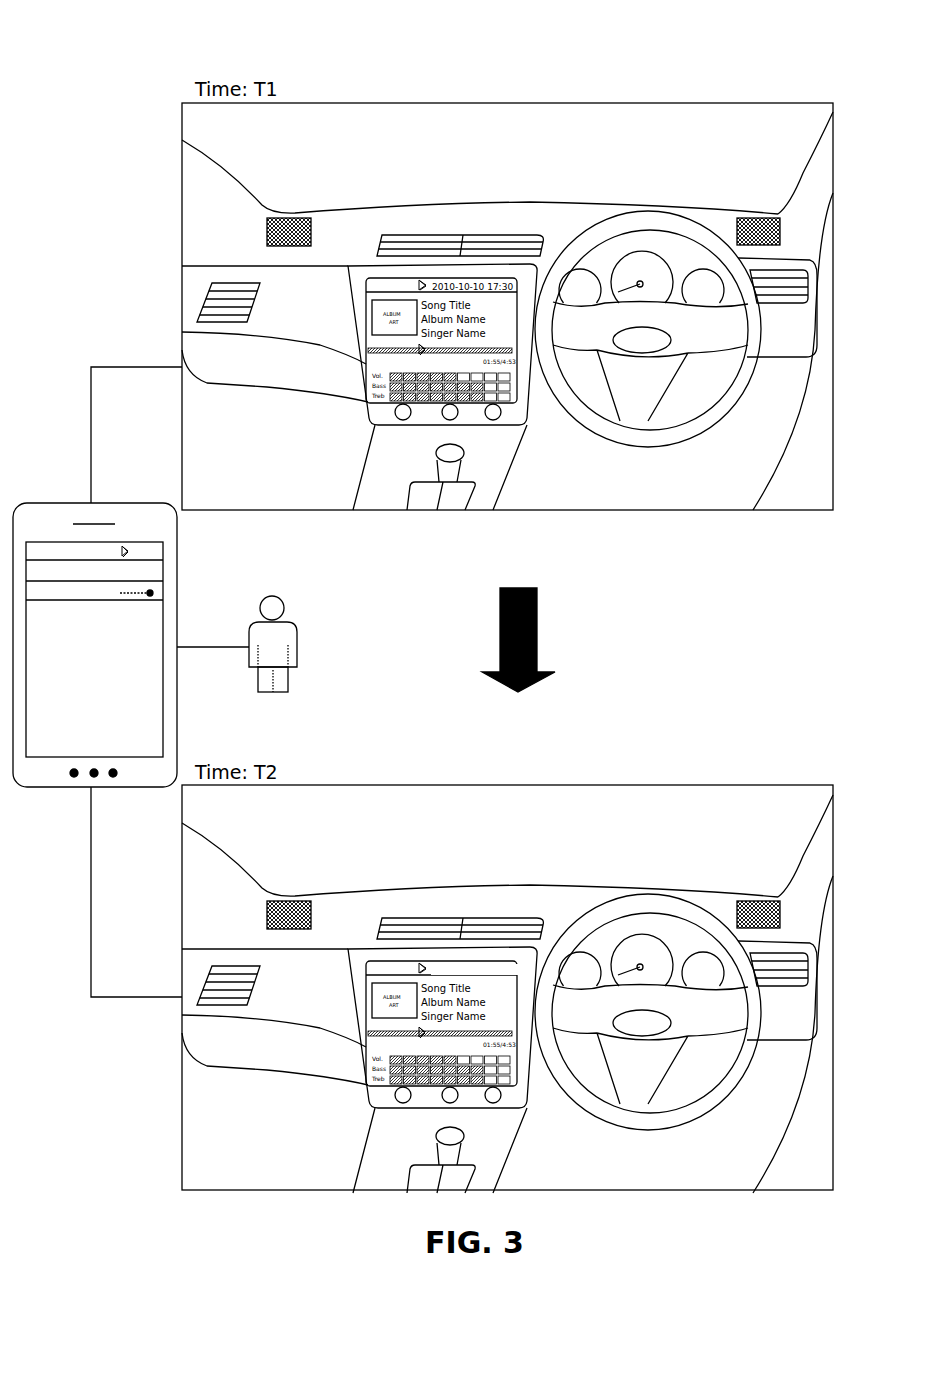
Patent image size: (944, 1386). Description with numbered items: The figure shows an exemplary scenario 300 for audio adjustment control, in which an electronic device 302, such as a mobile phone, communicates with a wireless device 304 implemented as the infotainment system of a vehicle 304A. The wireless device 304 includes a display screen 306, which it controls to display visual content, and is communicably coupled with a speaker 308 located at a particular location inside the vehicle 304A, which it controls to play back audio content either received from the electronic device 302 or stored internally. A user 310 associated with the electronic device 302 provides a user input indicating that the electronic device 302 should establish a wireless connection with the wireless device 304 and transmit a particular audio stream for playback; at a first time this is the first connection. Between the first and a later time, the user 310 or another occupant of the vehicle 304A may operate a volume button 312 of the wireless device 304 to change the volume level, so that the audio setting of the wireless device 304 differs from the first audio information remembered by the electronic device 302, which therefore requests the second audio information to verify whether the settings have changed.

The exemplary scenario 300 is at (88, 42).
The electronic device 302 is at (176, 588).
The wireless device 304 is at (348, 290).
The vehicle 304A is at (812, 163).
The display screen 306 is at (373, 363).
The speaker 308 is at (267, 233).
The user 310 is at (297, 636).
The volume button 312 is at (400, 420).